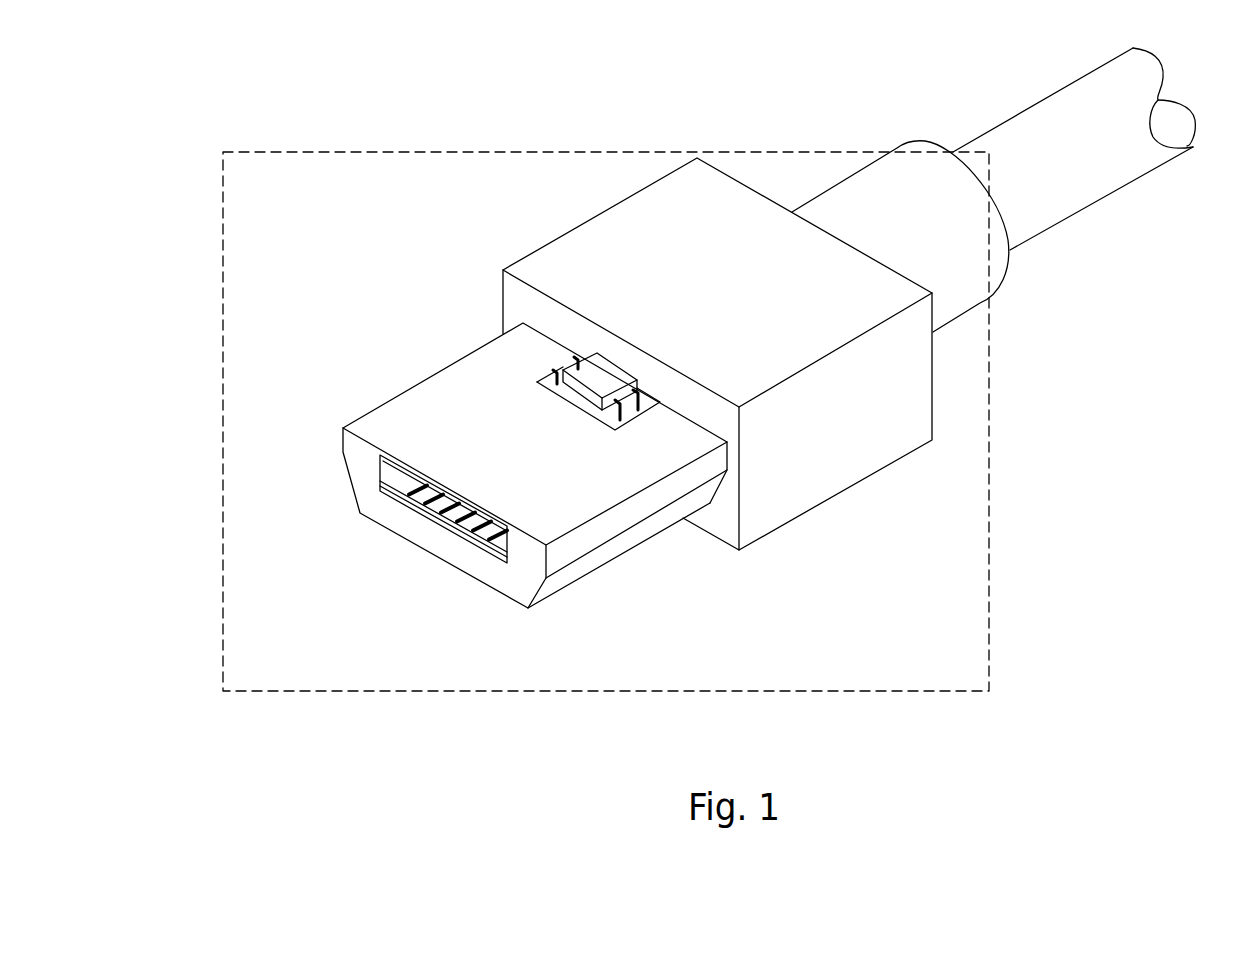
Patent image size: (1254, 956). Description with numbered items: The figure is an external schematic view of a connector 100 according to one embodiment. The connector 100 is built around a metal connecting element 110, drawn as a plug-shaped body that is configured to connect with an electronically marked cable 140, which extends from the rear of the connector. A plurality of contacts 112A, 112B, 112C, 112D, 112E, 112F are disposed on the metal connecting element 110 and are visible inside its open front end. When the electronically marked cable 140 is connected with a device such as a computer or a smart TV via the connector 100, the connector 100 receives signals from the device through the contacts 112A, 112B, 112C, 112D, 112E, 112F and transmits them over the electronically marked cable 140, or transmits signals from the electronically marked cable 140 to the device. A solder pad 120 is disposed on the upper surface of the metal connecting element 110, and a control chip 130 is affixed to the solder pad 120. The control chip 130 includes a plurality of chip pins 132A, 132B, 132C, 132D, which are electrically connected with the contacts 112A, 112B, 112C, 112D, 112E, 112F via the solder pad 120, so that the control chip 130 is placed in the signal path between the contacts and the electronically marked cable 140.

The connector 100 is at (991, 477).
The metal connecting element 110 is at (597, 530).
The contact 112A is at (380, 494).
The contact 112B is at (398, 512).
The contact 112C is at (424, 520).
The contact 112D is at (444, 530).
The contact 112E is at (464, 540).
The contact 112F is at (488, 550).
The solder pad 120 is at (561, 400).
The control chip 130 is at (623, 377).
The chip pin 132A is at (622, 421).
The chip pin 132B is at (641, 392).
The chip pin 132C is at (556, 373).
The chip pin 132D is at (577, 356).
The electronically marked cable 140 is at (1073, 198).